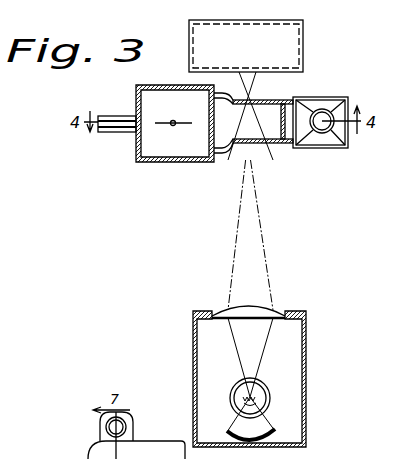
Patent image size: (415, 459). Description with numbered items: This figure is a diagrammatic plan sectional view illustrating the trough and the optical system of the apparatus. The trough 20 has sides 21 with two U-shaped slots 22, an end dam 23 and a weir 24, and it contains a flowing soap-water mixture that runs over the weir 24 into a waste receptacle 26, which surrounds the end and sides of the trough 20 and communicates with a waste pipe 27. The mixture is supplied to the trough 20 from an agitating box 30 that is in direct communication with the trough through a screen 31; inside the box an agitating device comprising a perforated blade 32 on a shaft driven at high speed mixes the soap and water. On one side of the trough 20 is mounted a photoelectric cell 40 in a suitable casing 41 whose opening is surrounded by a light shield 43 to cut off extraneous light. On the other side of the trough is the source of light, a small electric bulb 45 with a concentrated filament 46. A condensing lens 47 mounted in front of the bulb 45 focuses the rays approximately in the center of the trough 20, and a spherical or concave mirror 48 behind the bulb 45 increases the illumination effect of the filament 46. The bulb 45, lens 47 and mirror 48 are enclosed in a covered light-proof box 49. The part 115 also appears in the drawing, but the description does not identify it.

The photoelectric cell 40 is at (303, 35).
The casing 41 is at (200, 45).
The light shield 43 is at (262, 82).
The agitating box 30 is at (177, 160).
The screen 31 is at (112, 133).
The blade 32 is at (162, 126).
The U-shaped slots 22 is at (222, 95).
The trough 20 is at (272, 143).
The end dam 23 is at (283, 101).
The sides 21 is at (257, 143).
The waste receptacle 26 is at (348, 98).
The weir 24 is at (305, 100).
The waste pipe 27 is at (322, 133).
The light-proof box 49 is at (306, 312).
The condensing lens 47 is at (260, 316).
The electric bulb 45 is at (261, 386).
The filament 46 is at (253, 400).
The mirror 48 is at (274, 431).
The pivot bearing 115 is at (127, 425).